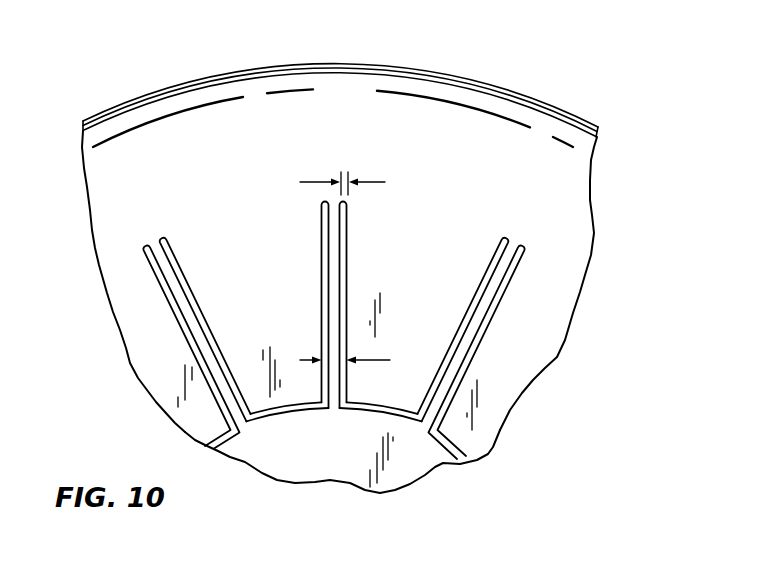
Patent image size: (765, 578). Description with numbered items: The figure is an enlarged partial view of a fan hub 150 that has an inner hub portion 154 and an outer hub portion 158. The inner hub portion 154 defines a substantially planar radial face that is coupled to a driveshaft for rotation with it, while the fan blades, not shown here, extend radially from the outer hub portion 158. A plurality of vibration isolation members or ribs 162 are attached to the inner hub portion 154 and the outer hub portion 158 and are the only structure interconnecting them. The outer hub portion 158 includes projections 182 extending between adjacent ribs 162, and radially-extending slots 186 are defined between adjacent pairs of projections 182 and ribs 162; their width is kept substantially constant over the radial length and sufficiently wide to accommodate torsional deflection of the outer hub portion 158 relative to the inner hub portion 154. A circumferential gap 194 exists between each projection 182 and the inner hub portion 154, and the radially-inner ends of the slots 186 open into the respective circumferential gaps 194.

The hub 150 is at (541, 53).
The inner hub portion 154 is at (413, 458).
The outer hub portion 158 is at (563, 166).
The rib 162 is at (330, 326).
The projection 182 is at (252, 272).
The radially-extending slot 186 is at (162, 293).
The circumferential gap 194 is at (238, 454).